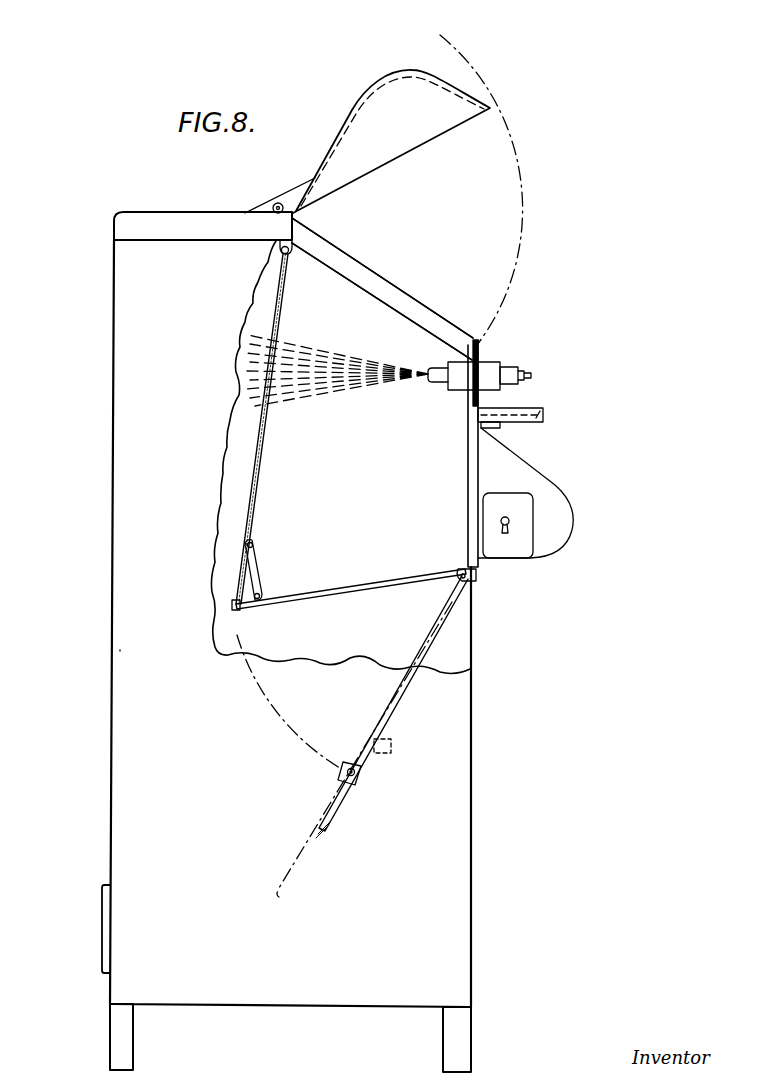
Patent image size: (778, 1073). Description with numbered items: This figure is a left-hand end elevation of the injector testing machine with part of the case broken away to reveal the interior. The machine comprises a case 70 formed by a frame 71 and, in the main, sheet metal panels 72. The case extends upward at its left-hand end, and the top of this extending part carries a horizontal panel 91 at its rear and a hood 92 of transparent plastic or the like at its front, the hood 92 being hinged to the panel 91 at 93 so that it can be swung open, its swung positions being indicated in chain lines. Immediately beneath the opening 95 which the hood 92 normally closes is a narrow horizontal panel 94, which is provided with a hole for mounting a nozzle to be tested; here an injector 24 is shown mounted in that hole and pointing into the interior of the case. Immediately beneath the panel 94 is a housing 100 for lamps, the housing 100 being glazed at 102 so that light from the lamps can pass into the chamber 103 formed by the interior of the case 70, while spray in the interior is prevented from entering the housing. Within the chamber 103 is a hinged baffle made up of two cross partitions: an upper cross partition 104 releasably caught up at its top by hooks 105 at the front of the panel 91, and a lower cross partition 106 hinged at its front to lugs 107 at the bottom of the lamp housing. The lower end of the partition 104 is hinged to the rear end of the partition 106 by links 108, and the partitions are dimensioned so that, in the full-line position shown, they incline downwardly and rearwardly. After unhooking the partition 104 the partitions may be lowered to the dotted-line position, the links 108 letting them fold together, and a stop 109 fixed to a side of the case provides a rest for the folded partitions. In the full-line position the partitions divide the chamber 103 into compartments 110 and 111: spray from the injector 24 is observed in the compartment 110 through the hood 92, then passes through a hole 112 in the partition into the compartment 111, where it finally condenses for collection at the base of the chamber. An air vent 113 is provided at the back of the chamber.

The injector 24 is at (488, 378).
The case 70 is at (472, 706).
The frame 71 is at (410, 318).
The sheet metal panels 72 is at (242, 790).
The horizontal panel 91 is at (182, 212).
The hood 92 is at (372, 113).
The hinge 93 is at (275, 203).
The narrow horizontal panel 94 is at (478, 349).
The opening 95 is at (371, 274).
The housing 100 is at (524, 466).
The glazing 102 is at (468, 471).
The chamber 103 is at (410, 560).
The cross partition 104 is at (242, 422).
The hooks 105 is at (264, 250).
The cross partition 106 is at (326, 600).
The lugs 107 is at (472, 578).
The links 108 is at (254, 575).
The stop 109 is at (391, 750).
The compartment 110 is at (313, 275).
The compartment 111 is at (262, 293).
The hole 112 is at (265, 392).
The air vent 113 is at (102, 944).